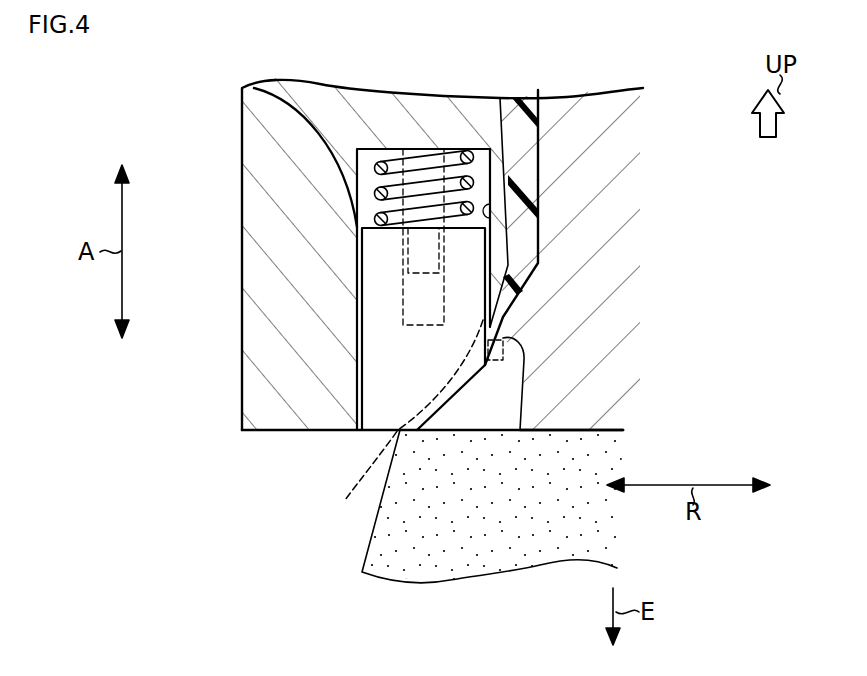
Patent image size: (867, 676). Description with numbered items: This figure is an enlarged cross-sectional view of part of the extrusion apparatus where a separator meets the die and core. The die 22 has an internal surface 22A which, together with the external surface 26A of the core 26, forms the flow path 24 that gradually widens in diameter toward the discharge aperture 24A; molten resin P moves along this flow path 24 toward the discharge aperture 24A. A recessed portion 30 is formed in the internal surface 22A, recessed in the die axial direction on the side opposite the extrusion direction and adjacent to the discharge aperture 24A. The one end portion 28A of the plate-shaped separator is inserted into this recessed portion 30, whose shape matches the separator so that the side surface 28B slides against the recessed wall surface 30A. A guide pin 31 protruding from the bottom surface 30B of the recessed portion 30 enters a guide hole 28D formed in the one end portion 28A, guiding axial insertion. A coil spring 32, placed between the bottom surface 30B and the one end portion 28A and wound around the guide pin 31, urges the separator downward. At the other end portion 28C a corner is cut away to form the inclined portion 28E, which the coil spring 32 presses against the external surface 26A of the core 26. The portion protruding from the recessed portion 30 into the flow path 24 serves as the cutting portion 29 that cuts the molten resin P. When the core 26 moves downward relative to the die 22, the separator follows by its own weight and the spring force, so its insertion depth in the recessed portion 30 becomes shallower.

The die 22 is at (236, 120).
The internal surface 22A is at (520, 138).
The flow path 24 is at (520, 297).
The discharge aperture 24A is at (345, 502).
The core 26 is at (553, 442).
The external surface 26A is at (540, 123).
The one end portion 28A is at (258, 87).
The side surface 28B is at (357, 283).
The other end portion 28C is at (383, 432).
The guide hole 28D is at (413, 302).
The inclined portion 28E is at (465, 432).
The cutting portion 29 is at (520, 430).
The recessed portion 30 is at (484, 173).
The recessed wall surface 30A is at (492, 212).
The bottom surface 30B is at (435, 149).
The guide pin 31 is at (387, 150).
The coil spring 32 is at (357, 149).
The molten resin P is at (362, 571).